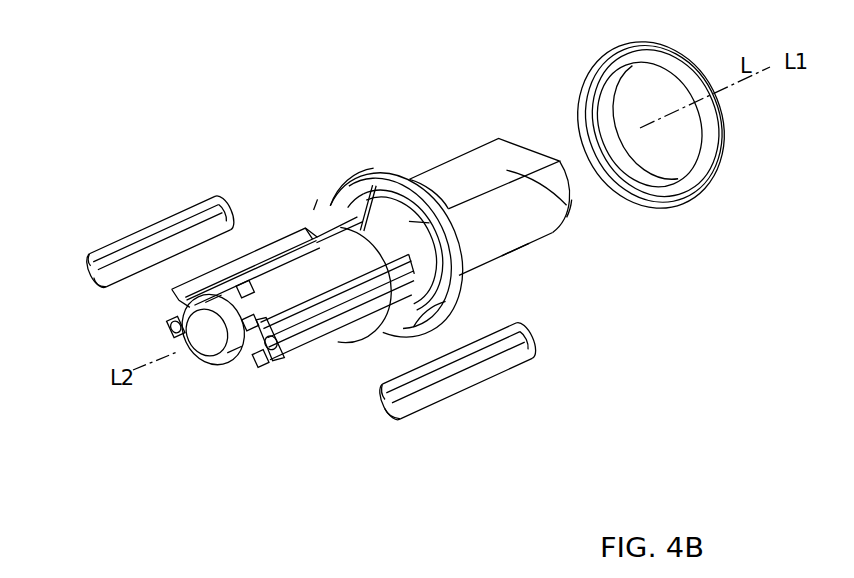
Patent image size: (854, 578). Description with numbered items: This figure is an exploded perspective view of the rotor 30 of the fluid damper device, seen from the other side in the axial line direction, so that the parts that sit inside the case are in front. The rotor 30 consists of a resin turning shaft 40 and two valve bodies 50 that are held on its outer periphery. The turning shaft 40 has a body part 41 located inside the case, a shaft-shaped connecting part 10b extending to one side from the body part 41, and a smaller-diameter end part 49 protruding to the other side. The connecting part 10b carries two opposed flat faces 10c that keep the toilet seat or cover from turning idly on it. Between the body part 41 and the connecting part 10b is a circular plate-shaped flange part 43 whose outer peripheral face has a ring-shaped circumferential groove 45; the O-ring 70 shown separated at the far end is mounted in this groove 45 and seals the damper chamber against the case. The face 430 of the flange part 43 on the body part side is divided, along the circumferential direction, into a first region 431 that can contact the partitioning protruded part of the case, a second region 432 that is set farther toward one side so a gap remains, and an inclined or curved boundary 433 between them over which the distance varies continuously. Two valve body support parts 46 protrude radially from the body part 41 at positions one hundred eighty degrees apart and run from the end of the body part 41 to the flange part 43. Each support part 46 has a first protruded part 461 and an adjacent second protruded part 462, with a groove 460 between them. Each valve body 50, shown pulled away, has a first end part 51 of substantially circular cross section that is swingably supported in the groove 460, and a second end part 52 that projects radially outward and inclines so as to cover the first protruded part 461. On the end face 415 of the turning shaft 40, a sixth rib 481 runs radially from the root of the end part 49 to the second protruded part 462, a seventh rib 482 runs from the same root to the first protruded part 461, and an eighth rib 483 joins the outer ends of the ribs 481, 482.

The rotor 30 is at (261, 185).
The turning shaft 40 is at (478, 140).
The connecting part 10b is at (523, 237).
The flat face 10c is at (573, 205).
The body part 41 is at (243, 365).
The end face 415 is at (237, 357).
The flange part 43 is at (362, 155).
The face 430 is at (383, 207).
The first region 431 is at (318, 210).
The second region 432 is at (374, 203).
The boundary 433 is at (420, 223).
The circumferential groove 45 is at (418, 200).
The valve body support part 46 is at (173, 328).
The groove 460 is at (273, 347).
The first protruded part 461 is at (327, 343).
The second protruded part 462 is at (350, 300).
The sixth rib 481 is at (252, 322).
The seventh rib 482 is at (260, 360).
The eighth rib 483 is at (245, 287).
The end part 49 is at (210, 347).
The valve body 50 is at (140, 232).
The first end part 51 is at (107, 288).
The second end part 52 is at (83, 262).
The O-ring 70 is at (703, 185).